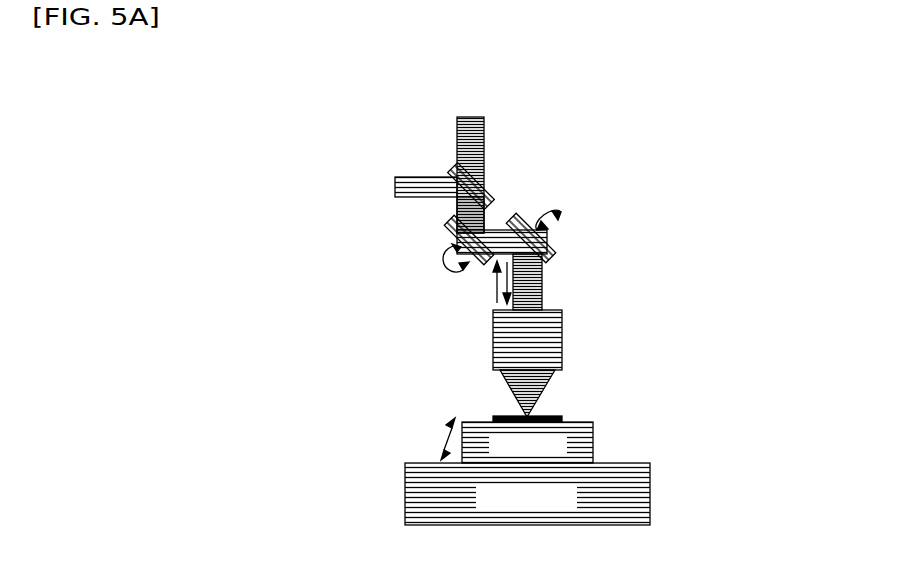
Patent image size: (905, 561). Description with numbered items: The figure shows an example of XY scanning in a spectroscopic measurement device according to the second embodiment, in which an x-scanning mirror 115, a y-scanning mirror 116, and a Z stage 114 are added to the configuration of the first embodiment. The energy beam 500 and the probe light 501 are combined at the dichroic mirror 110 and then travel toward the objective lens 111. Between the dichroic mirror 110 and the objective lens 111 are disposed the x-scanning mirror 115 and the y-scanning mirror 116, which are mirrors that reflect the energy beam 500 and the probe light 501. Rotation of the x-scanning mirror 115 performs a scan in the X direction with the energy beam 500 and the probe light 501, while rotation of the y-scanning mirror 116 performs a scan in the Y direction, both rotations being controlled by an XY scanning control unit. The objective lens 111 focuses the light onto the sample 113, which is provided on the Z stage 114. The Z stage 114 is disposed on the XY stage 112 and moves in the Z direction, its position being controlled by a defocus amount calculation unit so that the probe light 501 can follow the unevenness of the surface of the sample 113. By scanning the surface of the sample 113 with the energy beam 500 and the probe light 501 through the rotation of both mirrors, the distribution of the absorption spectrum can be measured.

The energy beam 500 is at (478, 122).
The probe light 501 is at (411, 187).
The dichroic mirror 110 is at (477, 184).
The x-scanning mirror 115 is at (483, 262).
The y-scanning mirror 116 is at (548, 245).
The objective lens 111 is at (551, 330).
The sample 113 is at (552, 415).
The Z stage 114 is at (594, 445).
The XY stage 112 is at (406, 478).